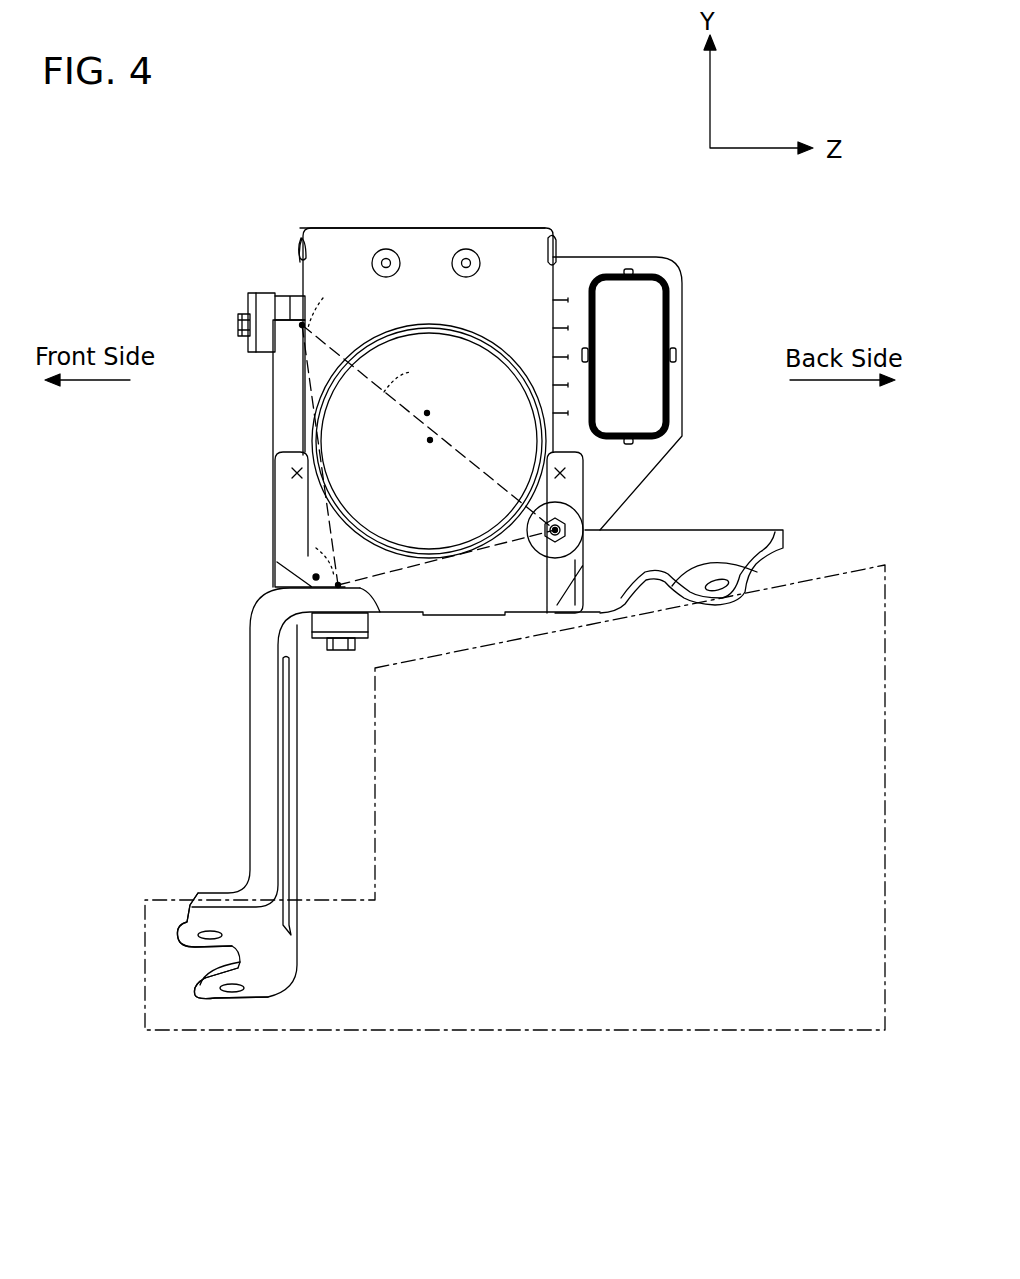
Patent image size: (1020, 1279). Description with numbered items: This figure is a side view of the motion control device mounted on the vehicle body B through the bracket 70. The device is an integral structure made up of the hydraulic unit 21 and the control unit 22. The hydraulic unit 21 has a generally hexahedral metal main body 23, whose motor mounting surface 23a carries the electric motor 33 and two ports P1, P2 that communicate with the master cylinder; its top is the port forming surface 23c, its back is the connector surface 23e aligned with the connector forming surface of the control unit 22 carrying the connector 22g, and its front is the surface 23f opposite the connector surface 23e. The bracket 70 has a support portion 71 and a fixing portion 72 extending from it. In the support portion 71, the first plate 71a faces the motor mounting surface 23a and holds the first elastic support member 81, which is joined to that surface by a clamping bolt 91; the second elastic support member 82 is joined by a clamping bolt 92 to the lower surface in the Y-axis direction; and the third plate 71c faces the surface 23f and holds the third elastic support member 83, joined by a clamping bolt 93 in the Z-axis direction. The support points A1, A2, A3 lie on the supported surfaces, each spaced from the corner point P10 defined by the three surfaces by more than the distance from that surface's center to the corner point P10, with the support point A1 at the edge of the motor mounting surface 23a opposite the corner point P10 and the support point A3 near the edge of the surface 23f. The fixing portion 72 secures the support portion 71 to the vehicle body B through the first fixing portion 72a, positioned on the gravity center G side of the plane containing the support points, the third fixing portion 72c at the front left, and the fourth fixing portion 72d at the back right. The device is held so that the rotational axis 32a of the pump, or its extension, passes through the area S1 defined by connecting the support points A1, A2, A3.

The hydraulic unit 21 is at (428, 299).
The main body 23 is at (494, 228).
The motor mounting surface 23a is at (530, 237).
The port forming surface 23c is at (430, 228).
The connector surface 23e is at (560, 282).
The front surface 23f is at (300, 272).
The control unit 22 is at (676, 262).
The connector 22g is at (666, 334).
The port P1 is at (386, 249).
The port P2 is at (466, 249).
The electric motor 33 is at (430, 326).
The rotational axis 32a is at (430, 441).
The gravity center G is at (428, 413).
The area S1 is at (416, 373).
The support point A1 is at (448, 559).
The support point A2 is at (308, 553).
The support point A3 is at (428, 425).
The corner point P10 is at (314, 577).
The support portion 71 is at (390, 511).
The first plate 71a is at (455, 600).
The third plate 71c is at (275, 402).
The bracket 70 is at (242, 838).
The fixing portion 72 is at (242, 838).
The first fixing portion 72a is at (205, 915).
The third fixing portion 72c is at (200, 1010).
The fourth fixing portion 72d is at (752, 545).
The first elastic support member 81 is at (568, 508).
The second elastic support member 82 is at (368, 626).
The third elastic support member 83 is at (262, 297).
The clamping bolt 91 is at (566, 536).
The clamping bolt 92 is at (340, 652).
The clamping bolt 93 is at (240, 330).
The vehicle body B is at (515, 1033).